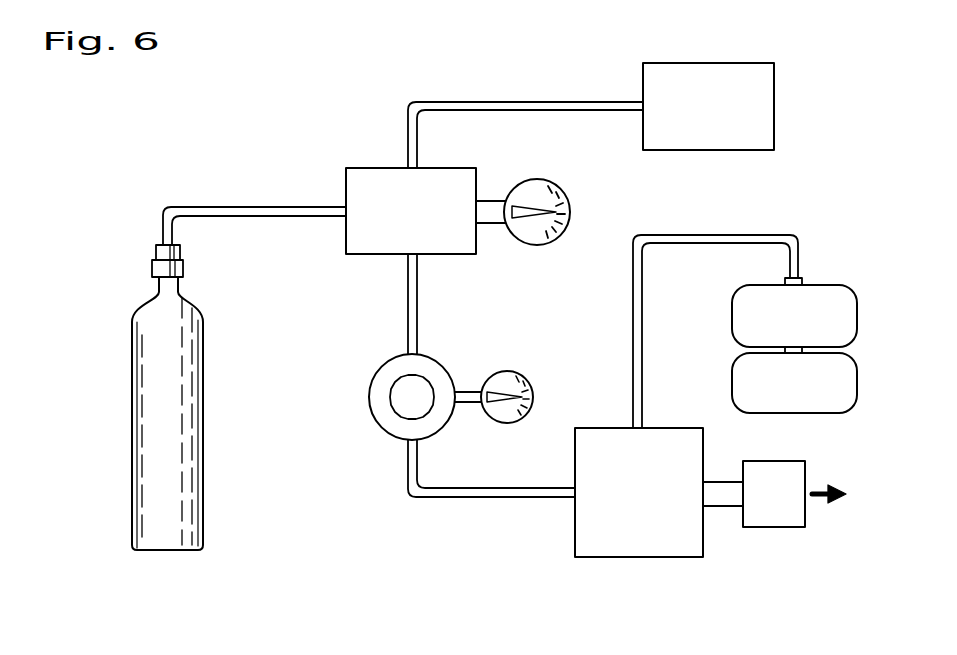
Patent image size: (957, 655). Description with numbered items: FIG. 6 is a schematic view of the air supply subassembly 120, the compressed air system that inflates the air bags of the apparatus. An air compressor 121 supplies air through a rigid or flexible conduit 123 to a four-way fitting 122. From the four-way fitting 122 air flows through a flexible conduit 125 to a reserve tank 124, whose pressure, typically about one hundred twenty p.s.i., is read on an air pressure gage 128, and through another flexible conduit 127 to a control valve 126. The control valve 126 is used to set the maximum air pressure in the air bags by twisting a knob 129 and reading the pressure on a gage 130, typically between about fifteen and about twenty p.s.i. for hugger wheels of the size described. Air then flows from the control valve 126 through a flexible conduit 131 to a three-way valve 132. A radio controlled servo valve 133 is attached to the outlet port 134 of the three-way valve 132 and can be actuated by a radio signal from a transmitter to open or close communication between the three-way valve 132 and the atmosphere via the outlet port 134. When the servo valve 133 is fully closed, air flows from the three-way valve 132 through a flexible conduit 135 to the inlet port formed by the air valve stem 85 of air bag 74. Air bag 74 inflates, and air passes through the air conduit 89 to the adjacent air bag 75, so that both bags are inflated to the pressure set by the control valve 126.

The air supply subassembly 120 is at (380, 68).
The air compressor 121 is at (686, 120).
The four-way fitting 122 is at (389, 227).
The conduit 123 is at (590, 102).
The reserve tank 124 is at (132, 432).
The flexible conduit 125 is at (272, 207).
The control valve 126 is at (447, 366).
The flexible conduit 127 is at (408, 313).
The air pressure gage 128 is at (570, 212).
The knob 129 is at (390, 400).
The gage 130 is at (533, 397).
The flexible conduit 131 is at (500, 497).
The three-way valve 132 is at (617, 506).
The radio controlled servo valve 133 is at (752, 508).
The outlet port 134 is at (722, 506).
The flexible conduit 135 is at (710, 235).
The air bag 74 is at (780, 329).
The air bag 75 is at (780, 397).
The air valve stem 85 is at (802, 281).
The air conduit 89 is at (785, 350).